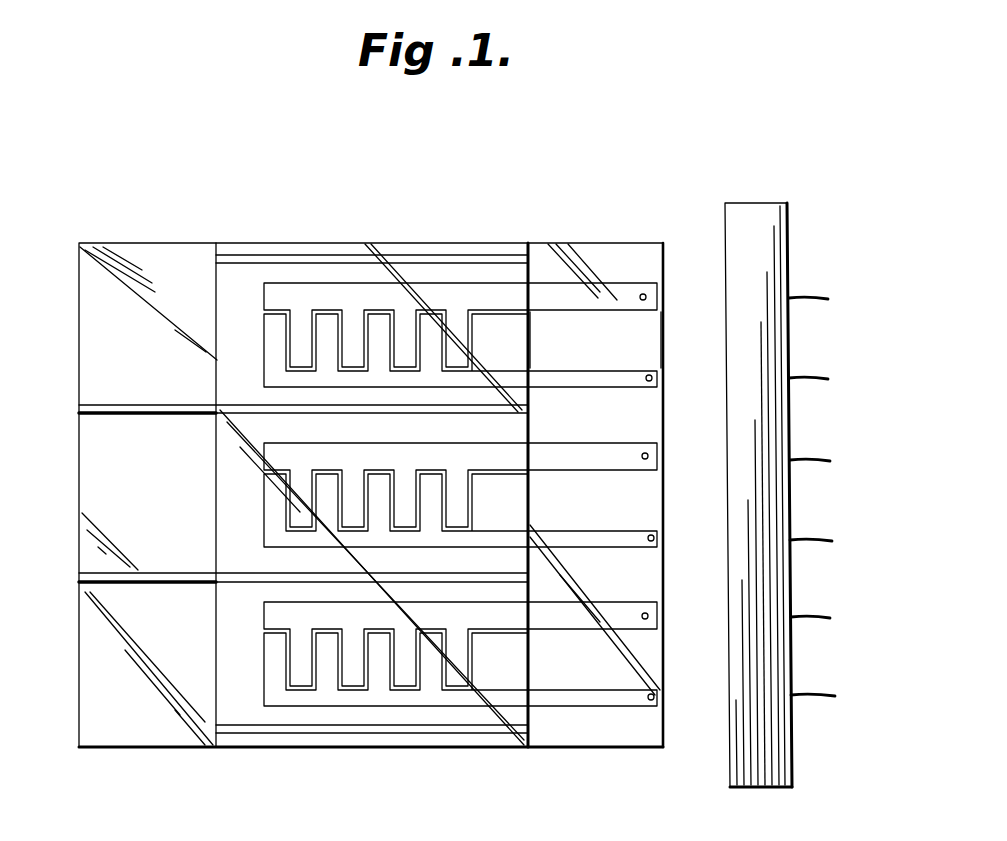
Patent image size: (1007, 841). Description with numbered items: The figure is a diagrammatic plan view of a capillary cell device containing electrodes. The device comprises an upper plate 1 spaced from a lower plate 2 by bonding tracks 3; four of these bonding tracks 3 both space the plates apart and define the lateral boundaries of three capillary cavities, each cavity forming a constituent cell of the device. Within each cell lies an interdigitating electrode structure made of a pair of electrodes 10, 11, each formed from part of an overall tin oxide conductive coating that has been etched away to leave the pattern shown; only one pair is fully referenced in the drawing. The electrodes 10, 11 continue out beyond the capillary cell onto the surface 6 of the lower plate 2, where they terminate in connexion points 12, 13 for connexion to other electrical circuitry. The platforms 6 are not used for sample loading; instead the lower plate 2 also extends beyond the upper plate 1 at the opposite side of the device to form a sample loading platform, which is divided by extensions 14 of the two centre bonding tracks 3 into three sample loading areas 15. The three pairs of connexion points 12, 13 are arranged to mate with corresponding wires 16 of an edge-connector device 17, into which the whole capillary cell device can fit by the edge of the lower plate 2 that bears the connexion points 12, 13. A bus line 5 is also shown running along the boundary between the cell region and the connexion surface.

The upper plate 1 is at (236, 277).
The lower plate 2 is at (621, 250).
The bonding tracks 3 is at (400, 257).
The bus line 5 is at (532, 263).
The surface of plate 2 6 is at (604, 350).
The electrode 10 is at (289, 291).
The electrode 11 is at (325, 376).
The connexion point 12 is at (645, 293).
The connexion point 13 is at (658, 376).
The extensions of bonding tracks 14 is at (89, 418).
The sample loading area 15 is at (137, 365).
The wires 16 is at (826, 301).
The edge-connector device 17 is at (788, 226).